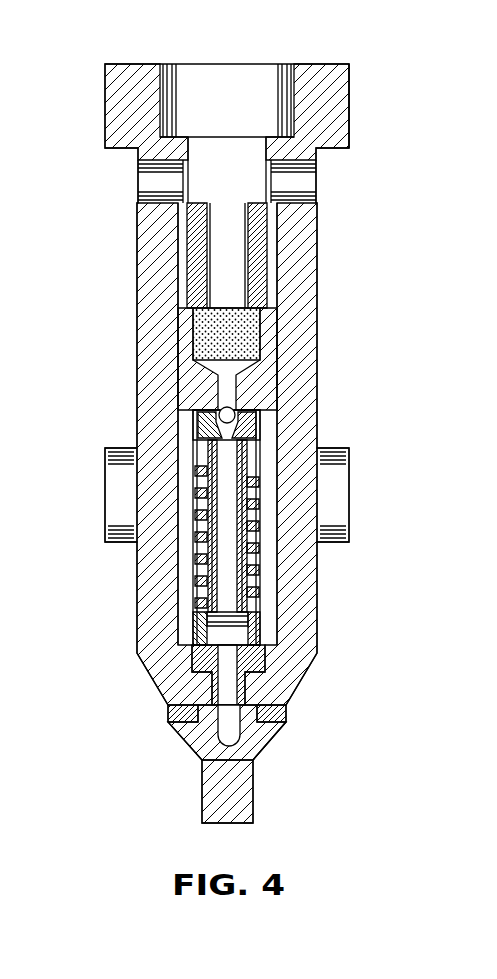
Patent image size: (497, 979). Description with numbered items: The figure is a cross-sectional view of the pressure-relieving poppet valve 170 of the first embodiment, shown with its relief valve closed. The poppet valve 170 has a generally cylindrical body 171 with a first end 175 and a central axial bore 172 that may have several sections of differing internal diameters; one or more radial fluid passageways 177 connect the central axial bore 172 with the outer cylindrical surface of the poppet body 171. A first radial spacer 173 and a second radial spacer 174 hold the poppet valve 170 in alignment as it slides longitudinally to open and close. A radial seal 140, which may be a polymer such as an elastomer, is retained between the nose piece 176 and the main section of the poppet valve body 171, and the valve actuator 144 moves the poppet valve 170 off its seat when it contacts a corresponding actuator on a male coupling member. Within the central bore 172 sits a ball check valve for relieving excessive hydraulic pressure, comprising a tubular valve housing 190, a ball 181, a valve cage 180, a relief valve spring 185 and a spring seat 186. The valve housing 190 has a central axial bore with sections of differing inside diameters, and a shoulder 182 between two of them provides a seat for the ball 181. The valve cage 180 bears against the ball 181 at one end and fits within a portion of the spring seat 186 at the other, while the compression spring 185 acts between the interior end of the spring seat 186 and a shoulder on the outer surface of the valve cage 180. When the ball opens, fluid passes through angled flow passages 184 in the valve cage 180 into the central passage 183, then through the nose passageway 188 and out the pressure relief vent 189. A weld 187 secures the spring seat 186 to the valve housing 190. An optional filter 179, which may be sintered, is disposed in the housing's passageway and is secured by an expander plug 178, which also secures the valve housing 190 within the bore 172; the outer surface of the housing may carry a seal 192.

The poppet valve 170 is at (360, 93).
The poppet valve body 171 is at (310, 328).
The central axial bore 172 is at (247, 181).
The first radial spacer 173 is at (349, 125).
The second radial spacer 174 is at (340, 488).
The first end 175 is at (127, 64).
The nose piece 176 is at (183, 733).
The radial fluid passageways 177 is at (150, 183).
The expander plug 178 is at (263, 262).
The filter 179 is at (255, 345).
The valve cage 180 is at (255, 453).
The ball 181 is at (257, 413).
The shoulder 182 is at (219, 414).
The central passage 183 is at (252, 595).
The angled flow passages 184 is at (200, 432).
The relief valve spring 185 is at (237, 592).
The spring seat 186 is at (252, 628).
The weld 187 is at (183, 618).
The nose passageway 188 is at (175, 723).
The pressure relief vent 189 is at (257, 752).
The valve housing 190 is at (183, 343).
The seal 192 is at (277, 290).
The radial seal 140 is at (288, 714).
The valve actuator 144 is at (253, 805).